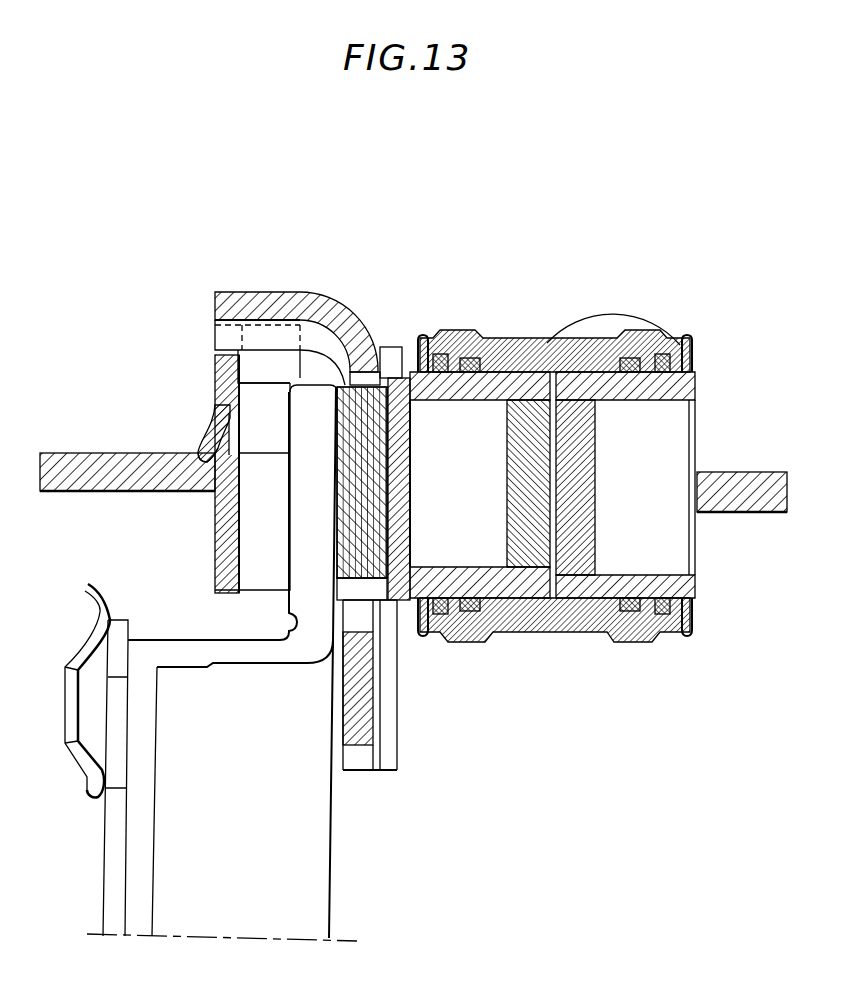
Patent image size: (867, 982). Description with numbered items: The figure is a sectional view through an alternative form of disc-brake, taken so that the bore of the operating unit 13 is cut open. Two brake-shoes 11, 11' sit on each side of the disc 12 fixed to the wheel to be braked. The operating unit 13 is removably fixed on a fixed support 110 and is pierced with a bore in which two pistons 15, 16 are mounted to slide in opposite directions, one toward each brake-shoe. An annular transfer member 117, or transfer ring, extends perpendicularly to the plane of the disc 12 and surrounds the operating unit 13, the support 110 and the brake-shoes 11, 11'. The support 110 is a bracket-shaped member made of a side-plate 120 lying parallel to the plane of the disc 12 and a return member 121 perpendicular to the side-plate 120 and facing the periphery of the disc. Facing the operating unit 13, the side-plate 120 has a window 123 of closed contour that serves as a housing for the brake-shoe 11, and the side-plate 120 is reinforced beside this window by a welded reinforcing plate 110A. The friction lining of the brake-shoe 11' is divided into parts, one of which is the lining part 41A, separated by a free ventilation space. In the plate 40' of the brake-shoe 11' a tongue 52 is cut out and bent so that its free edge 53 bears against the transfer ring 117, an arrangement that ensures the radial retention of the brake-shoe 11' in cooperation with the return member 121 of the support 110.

The brake-shoe 11 is at (412, 416).
The brake-shoe 11' is at (280, 311).
The disc 12 is at (298, 518).
The operating unit 13 is at (521, 338).
The piston 15 is at (455, 382).
The piston 16 is at (580, 383).
The plate 40' is at (198, 474).
The friction lining part 41A is at (258, 546).
The tongue 52 is at (212, 440).
The free edge 53 is at (200, 465).
The fixed support 110 is at (397, 771).
The reinforcing plate 110A is at (390, 707).
The annular transfer member 117 is at (70, 492).
The side-plate 120 is at (366, 730).
The return member 121 is at (326, 297).
The window 123 is at (392, 376).